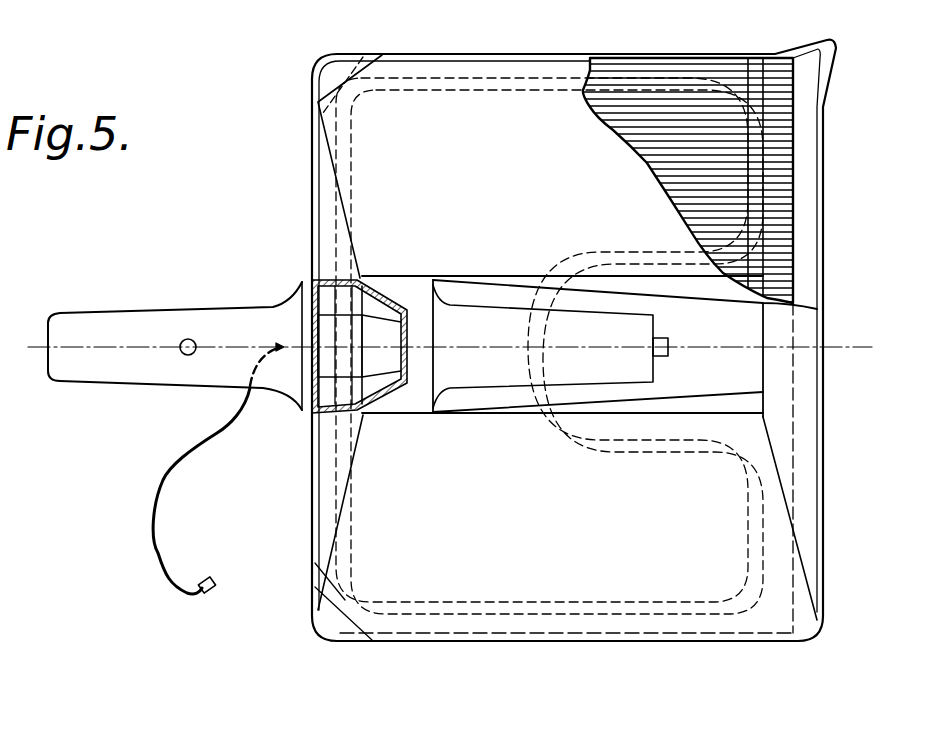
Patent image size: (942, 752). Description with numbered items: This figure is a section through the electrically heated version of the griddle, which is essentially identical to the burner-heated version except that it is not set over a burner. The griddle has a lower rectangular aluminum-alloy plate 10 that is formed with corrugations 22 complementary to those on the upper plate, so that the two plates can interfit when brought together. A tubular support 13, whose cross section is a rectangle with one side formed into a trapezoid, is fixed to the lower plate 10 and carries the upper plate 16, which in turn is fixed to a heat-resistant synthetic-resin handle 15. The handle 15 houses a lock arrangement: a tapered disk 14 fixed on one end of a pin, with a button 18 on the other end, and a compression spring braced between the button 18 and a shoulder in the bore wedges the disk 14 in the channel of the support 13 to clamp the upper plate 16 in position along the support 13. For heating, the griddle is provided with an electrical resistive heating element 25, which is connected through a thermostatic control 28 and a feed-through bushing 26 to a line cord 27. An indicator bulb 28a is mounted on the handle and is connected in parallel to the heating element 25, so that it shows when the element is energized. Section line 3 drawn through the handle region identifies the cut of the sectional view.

The handle 3 is at (135, 330).
The lower plate 10 is at (823, 185).
The tubular support 13 is at (313, 413).
The tapered disk 14 is at (383, 348).
The handle 15 is at (658, 388).
The upper plate 16 is at (610, 583).
The button 18 is at (670, 348).
The corrugations 22 is at (690, 162).
The electrical resistive heating element 25 is at (420, 610).
The feed-through bushing 26 is at (285, 386).
The line cord 27 is at (162, 492).
The thermostatic control 28 is at (333, 345).
The indicator bulb 28a is at (188, 356).